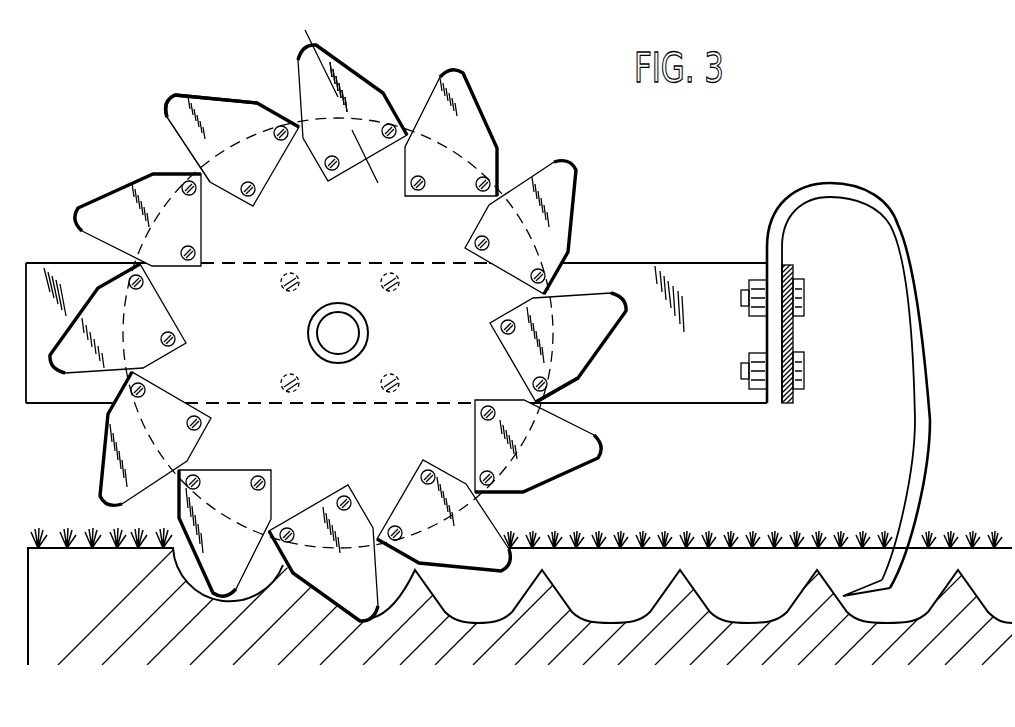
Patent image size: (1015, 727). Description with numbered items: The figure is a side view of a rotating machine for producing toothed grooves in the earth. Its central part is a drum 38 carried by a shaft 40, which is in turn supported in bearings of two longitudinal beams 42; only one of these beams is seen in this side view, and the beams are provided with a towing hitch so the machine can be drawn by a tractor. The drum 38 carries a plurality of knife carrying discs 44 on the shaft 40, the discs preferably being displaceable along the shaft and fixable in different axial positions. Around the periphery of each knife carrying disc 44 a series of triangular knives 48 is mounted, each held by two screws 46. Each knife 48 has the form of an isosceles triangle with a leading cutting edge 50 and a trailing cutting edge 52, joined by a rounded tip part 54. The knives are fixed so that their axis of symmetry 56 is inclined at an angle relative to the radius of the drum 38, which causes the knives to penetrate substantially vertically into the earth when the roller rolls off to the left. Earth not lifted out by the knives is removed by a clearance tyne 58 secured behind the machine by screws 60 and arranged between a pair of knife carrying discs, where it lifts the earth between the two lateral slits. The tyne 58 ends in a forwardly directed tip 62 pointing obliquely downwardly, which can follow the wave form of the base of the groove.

The drum 38 is at (562, 150).
The shaft 40 is at (372, 332).
The longitudinal beam 42 is at (656, 400).
The knife carrying disc 44 is at (580, 378).
The screw 46 is at (252, 196).
The triangular knife 48 is at (584, 460).
The leading cutting edge 50 is at (175, 128).
The trailing cutting edge 52 is at (242, 101).
The rounded tip part 54 is at (166, 100).
The axis of symmetry 56 is at (345, 93).
The clearance tyne 58 is at (926, 350).
The screw 60 is at (806, 369).
The forwardly directed tip 62 is at (858, 588).